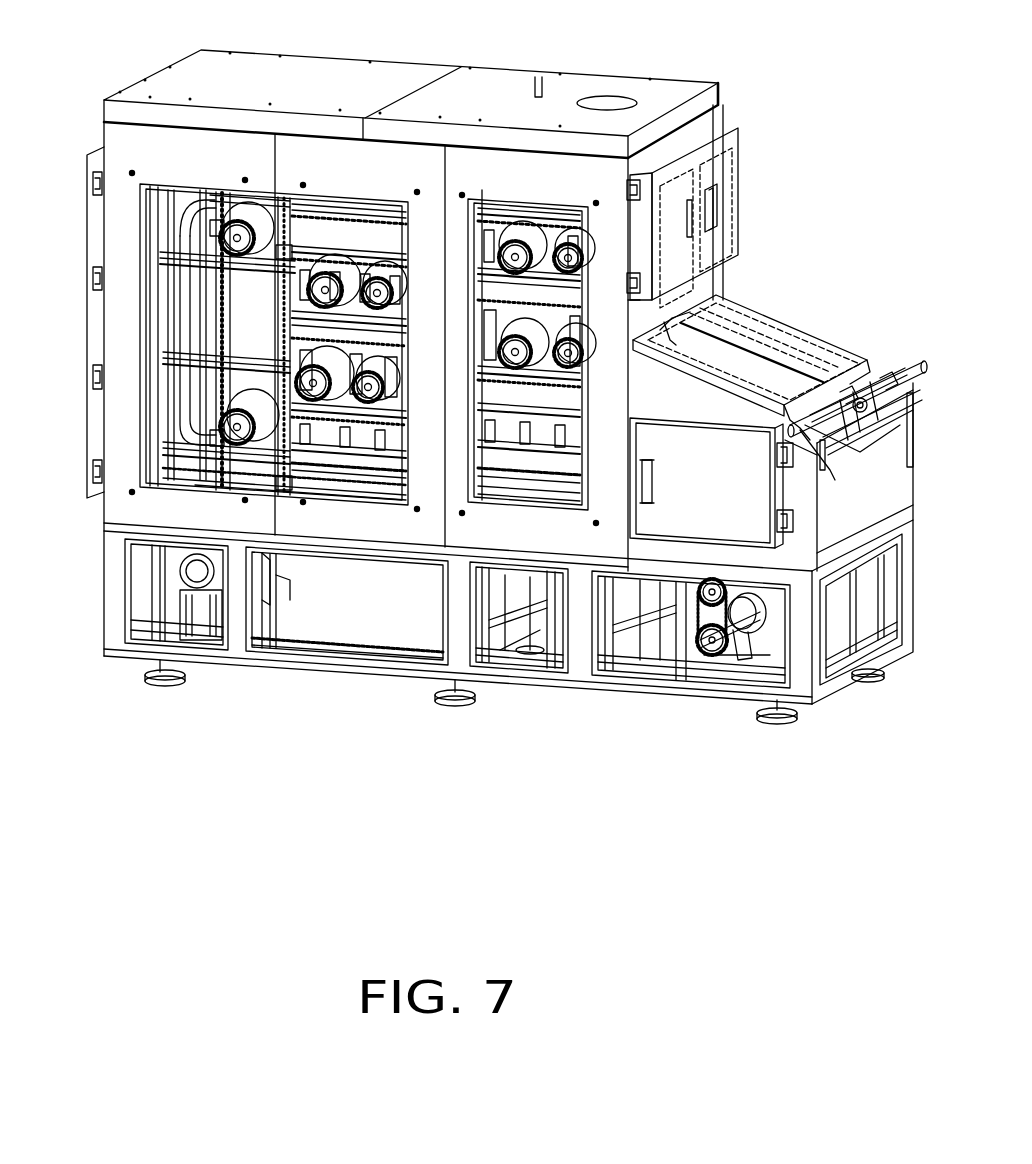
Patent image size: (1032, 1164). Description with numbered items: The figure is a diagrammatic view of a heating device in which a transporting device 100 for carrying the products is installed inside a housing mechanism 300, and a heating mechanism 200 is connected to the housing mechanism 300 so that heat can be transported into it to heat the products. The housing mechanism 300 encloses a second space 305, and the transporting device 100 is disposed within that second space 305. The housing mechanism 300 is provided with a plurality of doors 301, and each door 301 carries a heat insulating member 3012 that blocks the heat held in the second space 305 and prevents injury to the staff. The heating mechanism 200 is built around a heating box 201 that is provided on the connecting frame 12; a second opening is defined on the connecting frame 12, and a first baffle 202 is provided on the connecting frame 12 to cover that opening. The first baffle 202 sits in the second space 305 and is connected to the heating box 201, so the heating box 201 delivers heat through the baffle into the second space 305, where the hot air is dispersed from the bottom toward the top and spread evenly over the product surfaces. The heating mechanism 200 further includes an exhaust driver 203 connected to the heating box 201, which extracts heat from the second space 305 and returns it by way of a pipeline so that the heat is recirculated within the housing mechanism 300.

The housing mechanism 300 is at (449, 328).
The second space 305 is at (121, 288).
The transporting device 100 is at (306, 343).
The door 301 is at (725, 172).
The heat insulating member 3012 is at (738, 218).
The heating mechanism 200 is at (508, 660).
The heating box 201 is at (347, 655).
The first baffle 202 is at (519, 635).
The exhaust driver 203 is at (193, 646).
The connecting frame 12 is at (743, 657).